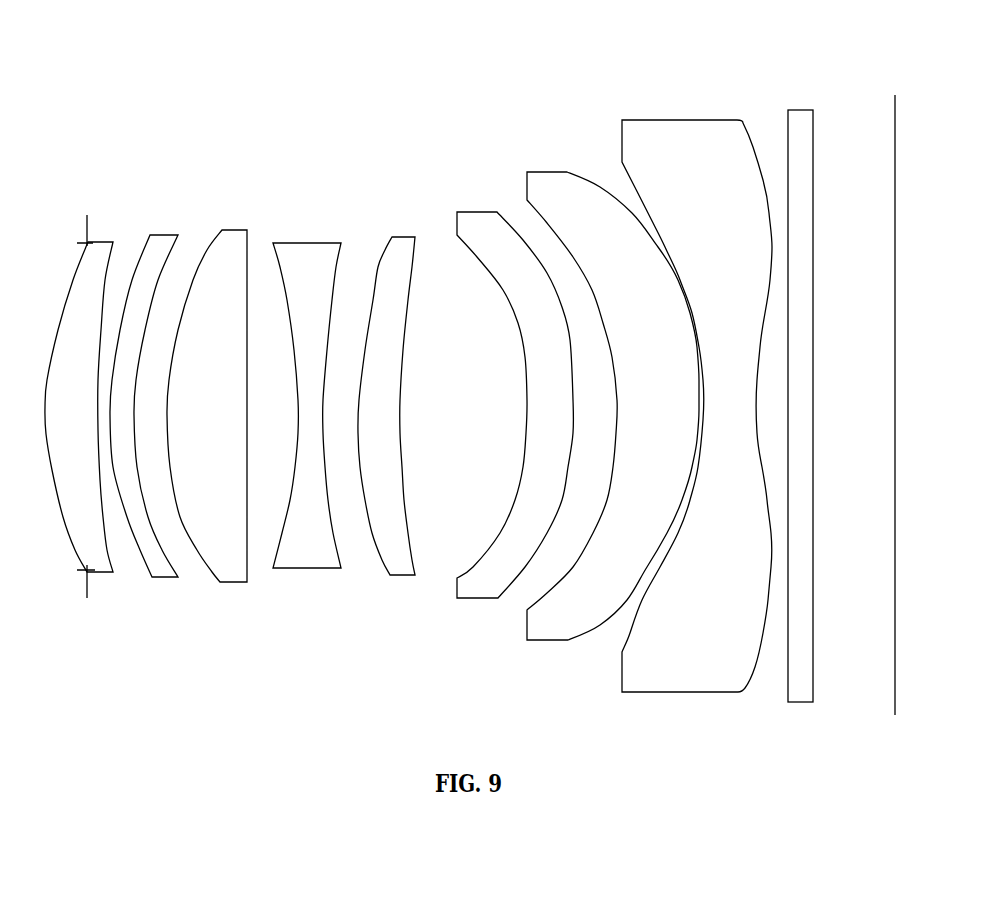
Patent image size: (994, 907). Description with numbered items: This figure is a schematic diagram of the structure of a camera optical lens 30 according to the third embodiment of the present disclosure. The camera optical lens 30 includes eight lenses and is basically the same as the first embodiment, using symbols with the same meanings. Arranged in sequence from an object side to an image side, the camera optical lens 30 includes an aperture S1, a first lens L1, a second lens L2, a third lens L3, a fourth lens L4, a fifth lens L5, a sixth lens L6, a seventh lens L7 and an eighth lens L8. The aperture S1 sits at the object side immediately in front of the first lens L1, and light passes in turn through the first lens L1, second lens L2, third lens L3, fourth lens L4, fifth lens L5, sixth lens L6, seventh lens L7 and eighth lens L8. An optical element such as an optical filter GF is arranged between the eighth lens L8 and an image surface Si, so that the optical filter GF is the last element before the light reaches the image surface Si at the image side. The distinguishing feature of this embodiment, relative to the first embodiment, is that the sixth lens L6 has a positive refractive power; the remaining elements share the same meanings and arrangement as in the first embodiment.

The camera optical lens 30 is at (474, 44).
The aperture S1 is at (86, 391).
The first lens L1 is at (79, 392).
The second lens L2 is at (144, 390).
The third lens L3 is at (207, 392).
The fourth lens L4 is at (307, 390).
The fifth lens L5 is at (387, 391).
The sixth lens L6 is at (515, 390).
The seventh lens L7 is at (613, 390).
The eighth lens L8 is at (697, 389).
The optical filter GF is at (801, 388).
The image surface Si is at (896, 391).